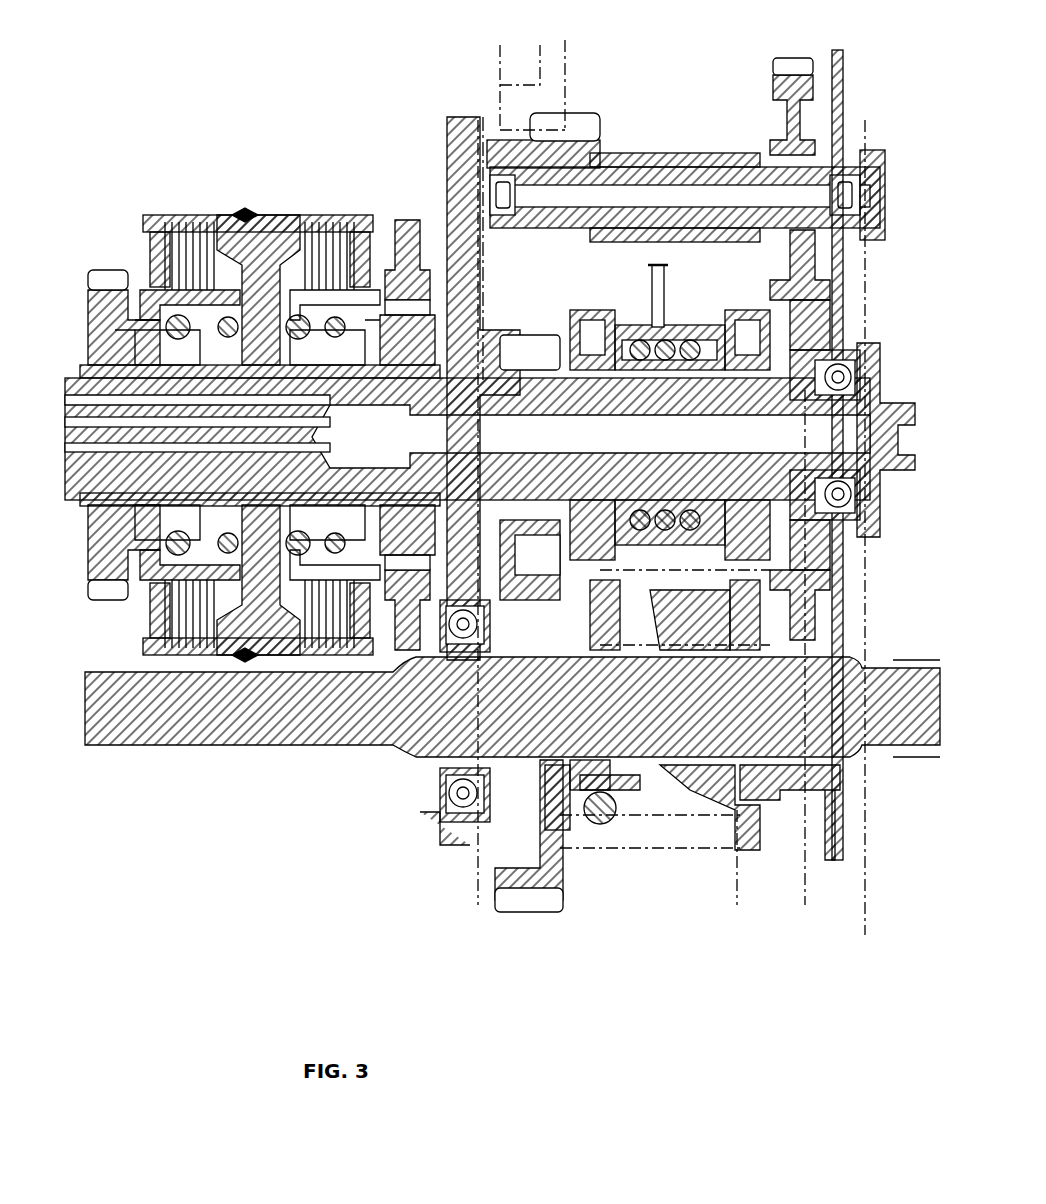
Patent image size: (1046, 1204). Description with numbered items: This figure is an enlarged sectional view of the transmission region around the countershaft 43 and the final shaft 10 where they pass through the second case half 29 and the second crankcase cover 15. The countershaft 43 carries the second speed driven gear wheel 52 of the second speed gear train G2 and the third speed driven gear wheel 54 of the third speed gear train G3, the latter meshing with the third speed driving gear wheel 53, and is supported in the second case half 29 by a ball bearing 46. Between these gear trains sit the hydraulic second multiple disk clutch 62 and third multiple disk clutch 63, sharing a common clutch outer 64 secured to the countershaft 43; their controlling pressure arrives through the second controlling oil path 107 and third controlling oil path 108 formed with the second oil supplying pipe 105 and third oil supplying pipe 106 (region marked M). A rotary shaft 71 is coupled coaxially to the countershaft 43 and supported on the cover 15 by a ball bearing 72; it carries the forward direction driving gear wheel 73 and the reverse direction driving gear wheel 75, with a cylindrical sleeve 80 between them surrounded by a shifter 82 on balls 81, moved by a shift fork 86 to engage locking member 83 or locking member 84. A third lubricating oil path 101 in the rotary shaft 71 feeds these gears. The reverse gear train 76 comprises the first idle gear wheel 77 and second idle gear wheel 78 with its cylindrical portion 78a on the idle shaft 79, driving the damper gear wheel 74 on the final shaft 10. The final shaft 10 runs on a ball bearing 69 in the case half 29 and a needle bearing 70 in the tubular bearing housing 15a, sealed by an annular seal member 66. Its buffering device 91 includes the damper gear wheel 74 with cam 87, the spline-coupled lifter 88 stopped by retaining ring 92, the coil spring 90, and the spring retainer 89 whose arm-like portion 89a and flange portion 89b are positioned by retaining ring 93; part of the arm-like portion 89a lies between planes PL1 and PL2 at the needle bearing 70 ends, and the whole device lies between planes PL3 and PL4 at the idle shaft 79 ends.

The final shaft 10 is at (240, 730).
The second crankcase cover 15 is at (845, 78).
The tubular bearing housing 15a is at (835, 860).
The second case half 29 is at (455, 130).
The countershaft 43 is at (260, 421).
The ball bearing 46 is at (467, 439).
The second speed driven gear wheel 52 is at (108, 598).
The third speed driving gear wheel 53 is at (406, 220).
The third speed driven gear wheel 54 is at (402, 577).
The second multiple disk clutch 62 is at (188, 215).
The third multiple disk clutch 63 is at (358, 215).
The clutch outer 64 is at (262, 215).
The annular seal member 66 is at (838, 785).
The ball bearing 69 is at (445, 792).
The needle bearing 70 is at (770, 790).
The rotary shaft 71 is at (875, 412).
The ball bearing 72 is at (845, 352).
The forward direction driving gear wheel 73 is at (522, 345).
The damper gear wheel 74 is at (510, 55).
The reverse direction driving gear wheel 75 is at (820, 574).
The reverse gear train 76 is at (820, 260).
The first idle gear wheel 77 is at (790, 60).
The second idle gear wheel 78 is at (580, 118).
The cylindrical portion 78a is at (655, 153).
The idle shaft 79 is at (708, 170).
The cylindrical sleeve 80 is at (695, 345).
The balls 81 is at (630, 345).
The shifter 82 is at (672, 330).
The locking member 83 is at (600, 312).
The locking member 84 is at (740, 312).
The shift fork 86 is at (650, 290).
The cam 87 is at (530, 598).
The lifter 88 is at (640, 790).
The spring retainer 89 is at (690, 820).
The arm-like portion 89a is at (670, 625).
The flange portion 89b is at (755, 610).
The coil spring 90 is at (608, 835).
The buffering device 91 is at (585, 855).
The retaining ring 92 is at (550, 660).
The retaining ring 93 is at (710, 660).
The third lubricating oil path 101 is at (860, 480).
The second oil supplying pipe 105 is at (221, 317).
The third oil supplying pipe 106 is at (81, 525).
The second controlling oil path 107 is at (215, 452).
The third controlling oil path 108 is at (188, 420).
The motor M is at (335, 215).
The second speed gear train G2 is at (115, 600).
The third speed gear train G3 is at (410, 600).
The imaginary plane PL1 is at (735, 880).
The imaginary plane PL2 is at (806, 880).
The imaginary plane PL3 is at (478, 880).
The imaginary plane PL4 is at (866, 905).